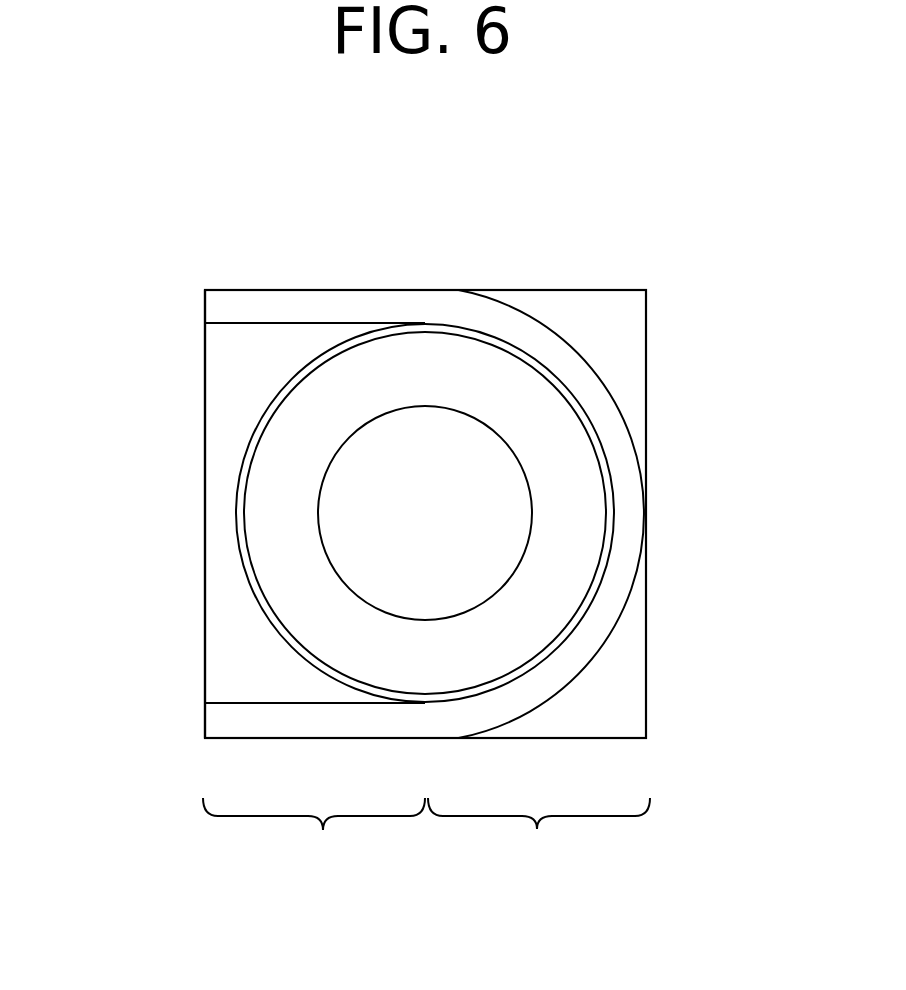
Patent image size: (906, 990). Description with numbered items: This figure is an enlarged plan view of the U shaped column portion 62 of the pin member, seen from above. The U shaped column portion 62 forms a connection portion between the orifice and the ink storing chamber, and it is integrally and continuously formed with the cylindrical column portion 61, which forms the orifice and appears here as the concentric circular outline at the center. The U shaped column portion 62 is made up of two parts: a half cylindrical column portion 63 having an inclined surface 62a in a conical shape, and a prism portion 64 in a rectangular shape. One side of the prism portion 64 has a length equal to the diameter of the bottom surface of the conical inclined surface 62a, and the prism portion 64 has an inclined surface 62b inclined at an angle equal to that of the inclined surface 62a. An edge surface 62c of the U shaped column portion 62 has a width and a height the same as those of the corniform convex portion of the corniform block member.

The cylindrical column portion 61 is at (565, 447).
The U shaped column portion 62 is at (579, 252).
The inclined surface in a conical-shape 62a is at (595, 622).
The inclined surface 62b is at (369, 307).
The edge surface 62c is at (205, 388).
The half cylindrical column portion 63 is at (539, 838).
The prism portion 64 is at (314, 838).